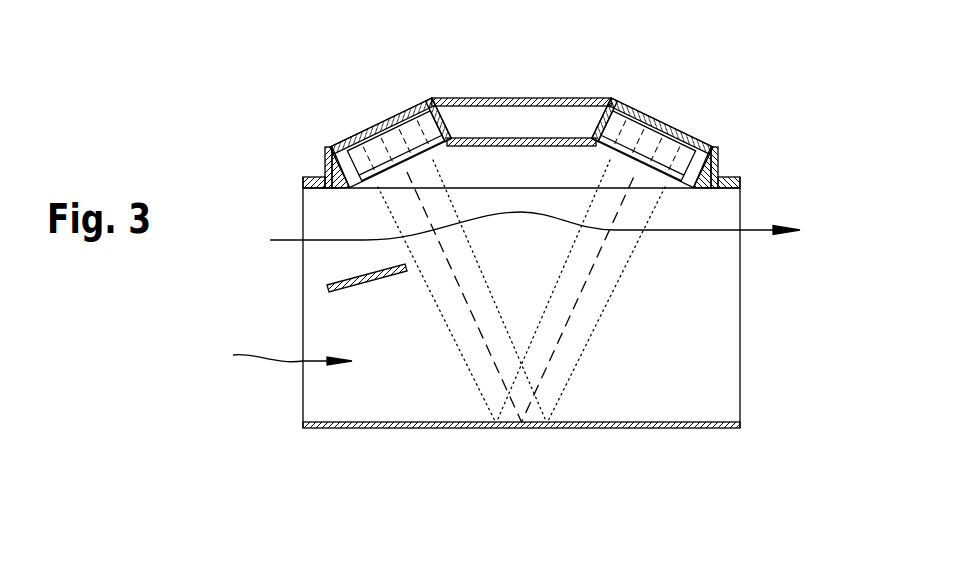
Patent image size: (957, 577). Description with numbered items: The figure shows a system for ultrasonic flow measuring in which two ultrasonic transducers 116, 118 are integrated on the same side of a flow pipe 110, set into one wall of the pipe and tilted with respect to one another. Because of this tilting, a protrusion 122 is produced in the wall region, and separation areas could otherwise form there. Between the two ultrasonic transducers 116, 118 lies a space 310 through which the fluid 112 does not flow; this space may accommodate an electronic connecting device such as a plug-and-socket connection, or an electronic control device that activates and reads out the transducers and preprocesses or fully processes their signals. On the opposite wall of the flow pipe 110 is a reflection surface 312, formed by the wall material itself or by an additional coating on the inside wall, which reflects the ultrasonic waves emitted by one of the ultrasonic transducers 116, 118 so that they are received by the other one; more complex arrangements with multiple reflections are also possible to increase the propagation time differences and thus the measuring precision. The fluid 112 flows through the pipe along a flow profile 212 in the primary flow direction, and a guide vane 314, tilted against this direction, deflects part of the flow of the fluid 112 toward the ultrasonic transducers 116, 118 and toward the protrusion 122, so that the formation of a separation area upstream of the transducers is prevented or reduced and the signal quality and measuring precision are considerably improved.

The flow pipe 110 is at (685, 428).
The fluid 112 is at (267, 355).
The ultrasonic transducer 116 is at (407, 140).
The ultrasonic transducer 118 is at (630, 150).
The protrusion 122 is at (560, 163).
The flow profile / flow line 212 is at (748, 228).
The space 310 is at (505, 112).
The reflection surface 312 is at (543, 417).
The guide vane 314 is at (367, 277).